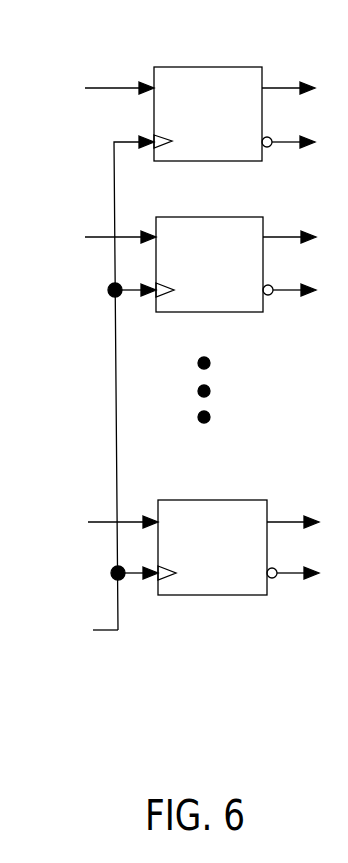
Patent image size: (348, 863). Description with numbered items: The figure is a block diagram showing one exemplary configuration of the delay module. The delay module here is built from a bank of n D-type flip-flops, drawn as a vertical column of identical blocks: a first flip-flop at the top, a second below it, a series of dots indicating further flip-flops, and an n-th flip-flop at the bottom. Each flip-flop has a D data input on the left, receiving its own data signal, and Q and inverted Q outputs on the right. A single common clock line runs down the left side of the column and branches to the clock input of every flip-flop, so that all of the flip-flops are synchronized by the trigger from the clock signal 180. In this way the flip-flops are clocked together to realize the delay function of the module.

The clock signal CLK 180 is at (118, 630).